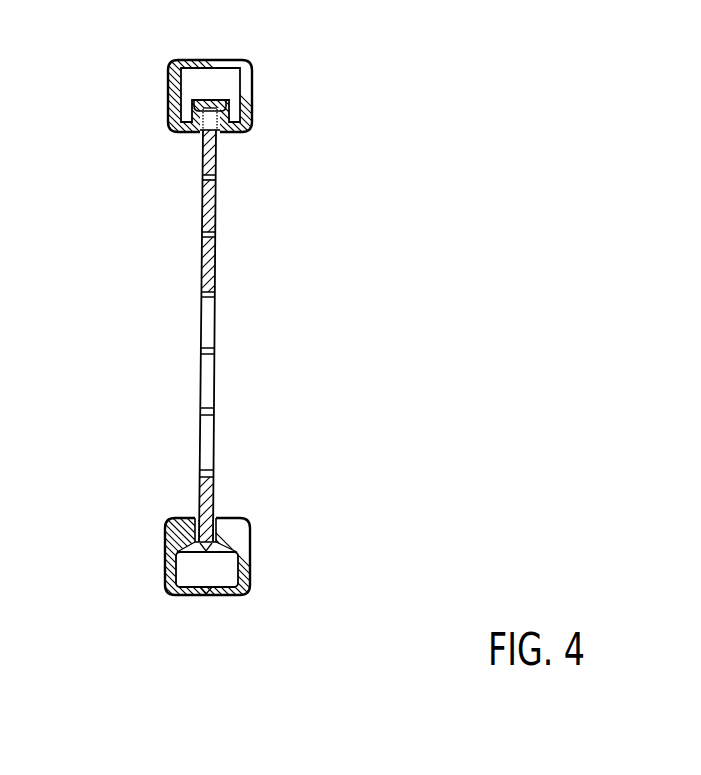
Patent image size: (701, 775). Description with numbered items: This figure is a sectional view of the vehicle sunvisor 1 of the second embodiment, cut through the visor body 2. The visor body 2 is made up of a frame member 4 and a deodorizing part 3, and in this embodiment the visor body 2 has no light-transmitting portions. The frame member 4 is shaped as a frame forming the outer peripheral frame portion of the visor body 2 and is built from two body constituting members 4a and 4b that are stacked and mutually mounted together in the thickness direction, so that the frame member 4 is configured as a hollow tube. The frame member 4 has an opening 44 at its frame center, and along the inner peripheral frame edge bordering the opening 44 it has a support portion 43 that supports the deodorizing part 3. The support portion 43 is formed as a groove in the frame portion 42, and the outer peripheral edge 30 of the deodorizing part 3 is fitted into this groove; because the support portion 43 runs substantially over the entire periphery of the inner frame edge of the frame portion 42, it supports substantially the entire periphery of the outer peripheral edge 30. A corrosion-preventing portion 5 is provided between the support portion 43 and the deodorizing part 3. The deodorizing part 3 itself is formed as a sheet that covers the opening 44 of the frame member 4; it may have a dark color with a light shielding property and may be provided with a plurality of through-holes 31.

The vehicle sunvisor 1 is at (106, 123).
The visor body 2 is at (352, 518).
The deodorizing part 3 is at (208, 500).
The outer peripheral edge 30 is at (219, 125).
The through-holes 31 is at (215, 176).
The frame member 4 is at (169, 93).
The body constituting member 4a is at (240, 588).
The body constituting member 4b is at (194, 596).
The frame portion 42 is at (237, 61).
The support portion 43 is at (221, 110).
The opening 44 is at (191, 518).
The corrosion-preventing portion 5 is at (196, 130).